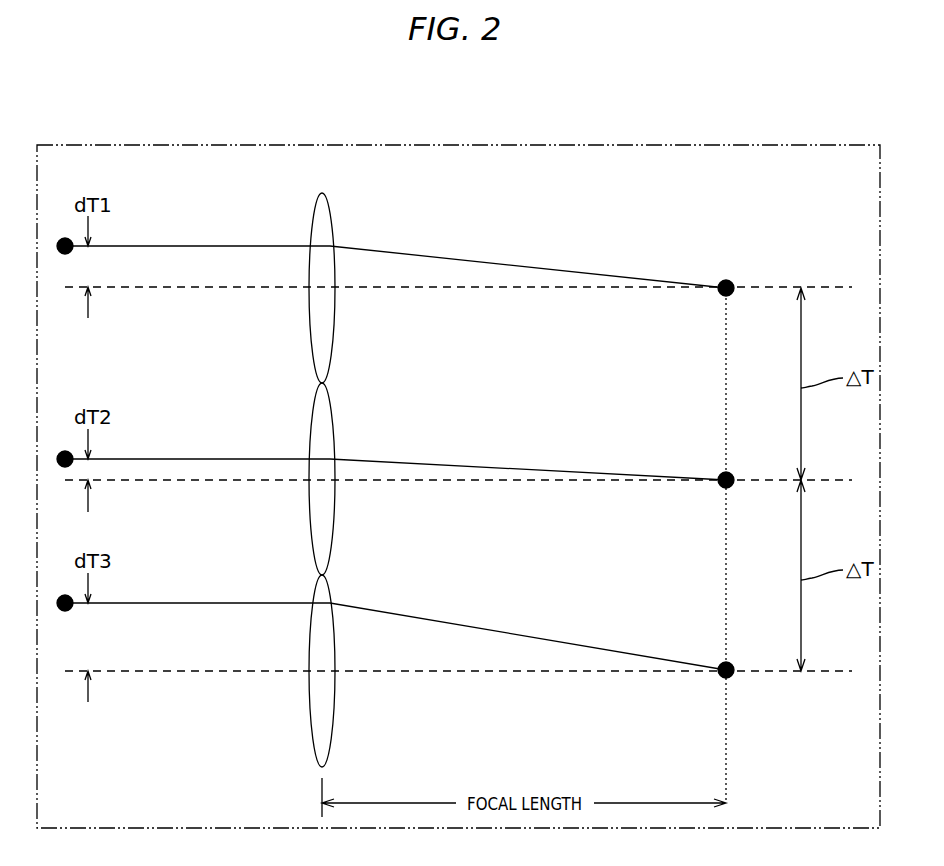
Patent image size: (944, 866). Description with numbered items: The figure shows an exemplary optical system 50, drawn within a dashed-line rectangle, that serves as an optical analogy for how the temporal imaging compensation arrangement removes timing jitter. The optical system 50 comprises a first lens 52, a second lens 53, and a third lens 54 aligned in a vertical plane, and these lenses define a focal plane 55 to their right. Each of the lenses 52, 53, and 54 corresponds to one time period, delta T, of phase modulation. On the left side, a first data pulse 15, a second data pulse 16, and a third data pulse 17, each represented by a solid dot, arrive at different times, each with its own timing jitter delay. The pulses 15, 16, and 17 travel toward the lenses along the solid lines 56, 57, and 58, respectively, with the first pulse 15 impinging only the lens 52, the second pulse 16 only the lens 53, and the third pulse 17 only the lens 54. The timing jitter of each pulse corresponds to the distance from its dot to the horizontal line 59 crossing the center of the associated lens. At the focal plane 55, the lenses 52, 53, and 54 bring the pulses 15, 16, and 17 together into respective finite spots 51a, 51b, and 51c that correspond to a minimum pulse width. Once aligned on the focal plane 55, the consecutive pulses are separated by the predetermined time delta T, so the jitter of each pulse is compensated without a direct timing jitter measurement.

The optical system 50 is at (135, 145).
The first data pulse 15 is at (65, 238).
The second data pulse 16 is at (65, 451).
The third data pulse 17 is at (65, 595).
The finite spot size 51a is at (722, 283).
The finite spot size 51b is at (722, 476).
The finite spot size 51c is at (722, 666).
The first lens 52 is at (332, 212).
The second lens 53 is at (334, 422).
The third lens 54 is at (333, 726).
The focal plane 55 is at (726, 740).
The solid line 56 is at (194, 246).
The solid line 57 is at (208, 459).
The solid line 58 is at (201, 603).
The horizontal line 59 is at (186, 287).